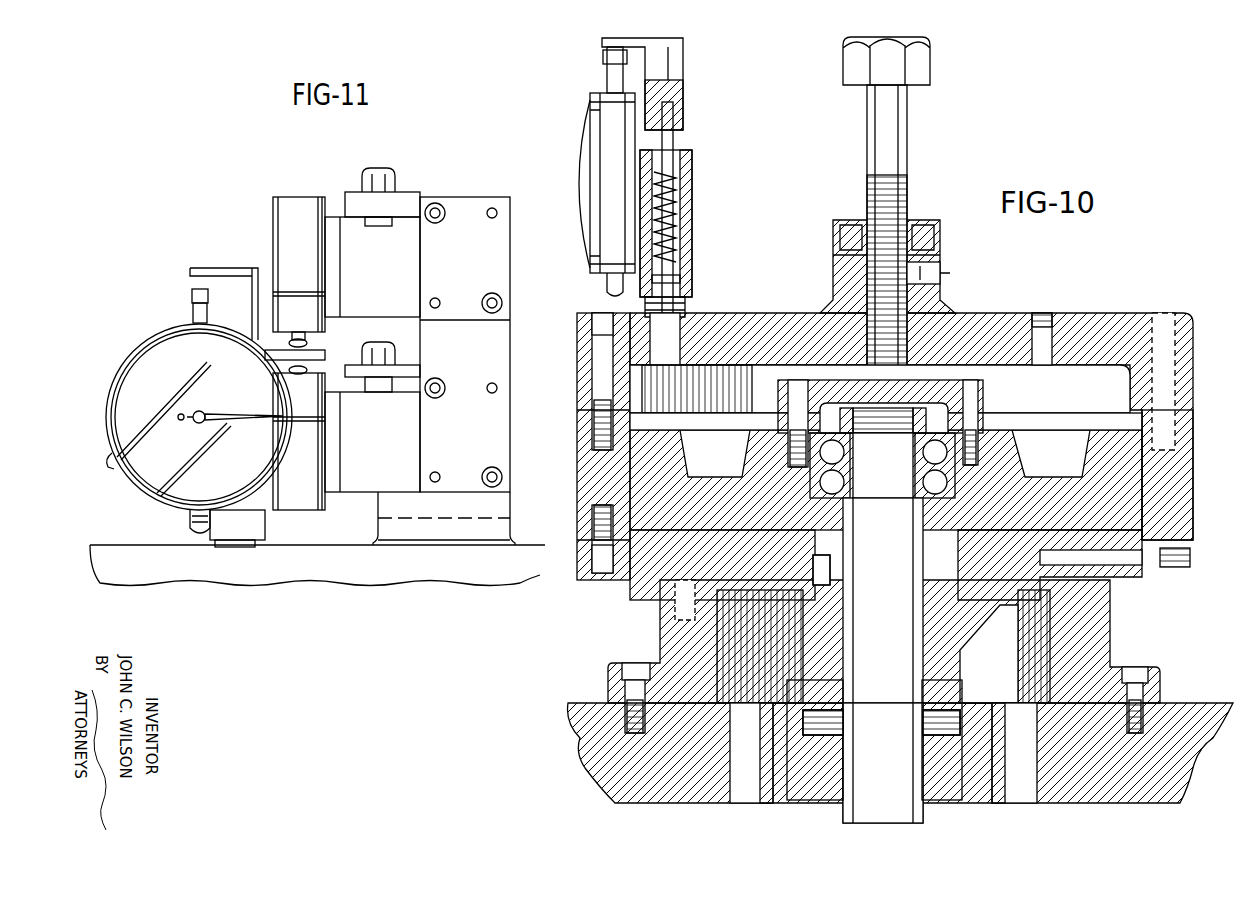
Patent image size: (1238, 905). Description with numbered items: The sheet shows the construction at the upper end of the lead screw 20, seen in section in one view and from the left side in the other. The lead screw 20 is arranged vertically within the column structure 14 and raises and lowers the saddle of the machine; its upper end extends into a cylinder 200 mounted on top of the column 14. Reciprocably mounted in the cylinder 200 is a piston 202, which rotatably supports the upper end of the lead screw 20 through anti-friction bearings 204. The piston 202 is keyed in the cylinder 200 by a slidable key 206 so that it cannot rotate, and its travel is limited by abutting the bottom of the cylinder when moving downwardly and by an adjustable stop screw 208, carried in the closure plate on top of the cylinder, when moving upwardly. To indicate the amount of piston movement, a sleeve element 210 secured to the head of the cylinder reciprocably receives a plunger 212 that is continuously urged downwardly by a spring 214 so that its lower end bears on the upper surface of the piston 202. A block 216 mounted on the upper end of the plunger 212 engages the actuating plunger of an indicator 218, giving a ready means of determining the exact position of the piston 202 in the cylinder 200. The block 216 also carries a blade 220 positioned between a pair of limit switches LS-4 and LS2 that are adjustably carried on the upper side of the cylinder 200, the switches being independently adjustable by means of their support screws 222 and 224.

In FIG. 10, the column structure 14 is at (1187, 703).
In FIG. 10, the lead screw 20 is at (890, 748).
In FIG. 11, the cylinder 200 is at (317, 580).
In FIG. 10, the cylinder 200 is at (1185, 456).
In FIG. 10, the piston 202 is at (1175, 398).
In FIG. 10, the anti-friction bearings 204 is at (962, 438).
In FIG. 10, the slidable key 206 is at (830, 564).
In FIG. 10, the adjustable stop screw 208 is at (910, 303).
In FIG. 11, the sleeve element 210 is at (265, 524).
In FIG. 10, the sleeve element 210 is at (690, 245).
In FIG. 10, the plunger 212 is at (680, 205).
In FIG. 10, the spring 214 is at (678, 178).
In FIG. 11, the block 216 is at (208, 266).
In FIG. 10, the block 216 is at (678, 76).
In FIG. 11, the indicator 218 is at (107, 392).
In FIG. 10, the indicator 218 is at (605, 125).
In FIG. 11, the blade 220 is at (345, 349).
In FIG. 11, the support screw 222 is at (395, 172).
In FIG. 11, the support screw 224 is at (395, 354).
In FIG. 11, the limit switch LS-4 is at (300, 310).
In FIG. 11, the limit switch LS2 is at (298, 396).